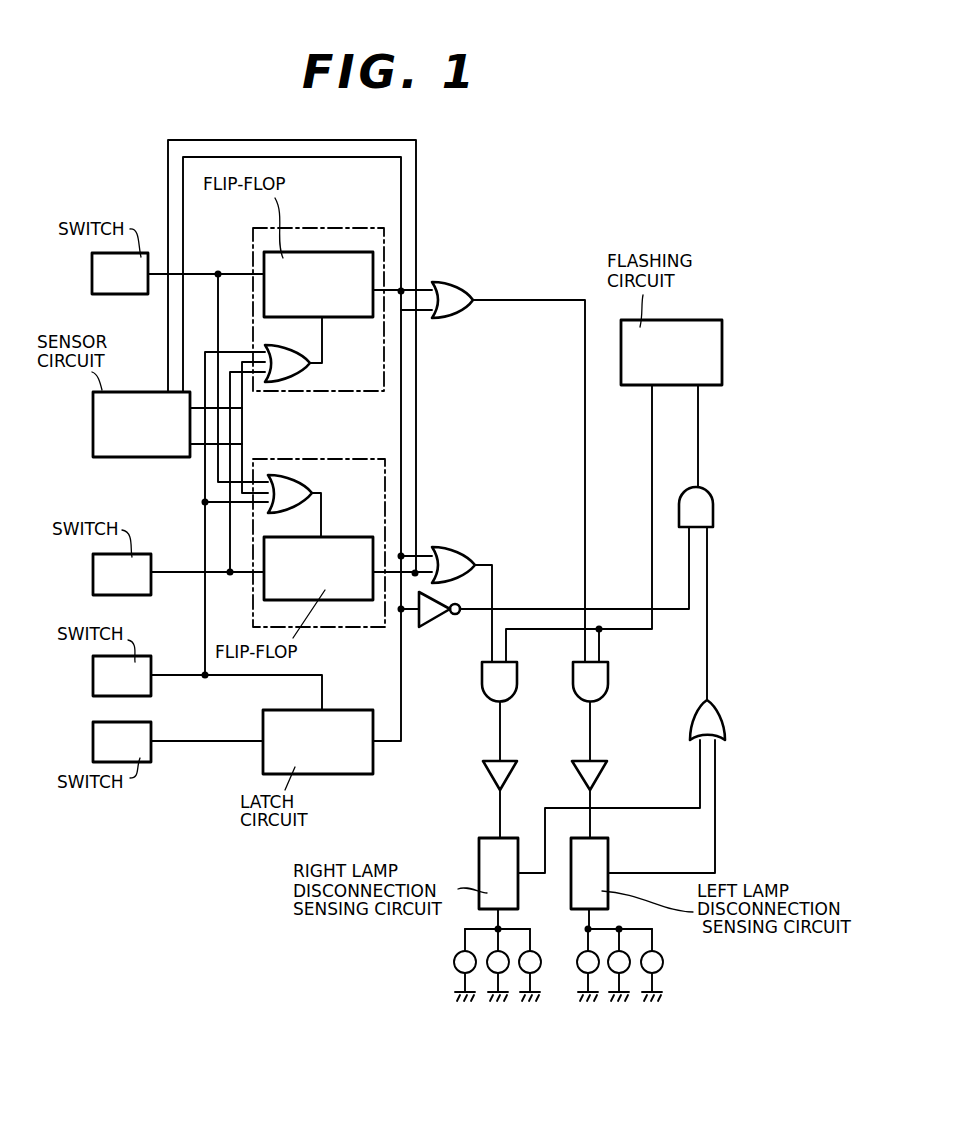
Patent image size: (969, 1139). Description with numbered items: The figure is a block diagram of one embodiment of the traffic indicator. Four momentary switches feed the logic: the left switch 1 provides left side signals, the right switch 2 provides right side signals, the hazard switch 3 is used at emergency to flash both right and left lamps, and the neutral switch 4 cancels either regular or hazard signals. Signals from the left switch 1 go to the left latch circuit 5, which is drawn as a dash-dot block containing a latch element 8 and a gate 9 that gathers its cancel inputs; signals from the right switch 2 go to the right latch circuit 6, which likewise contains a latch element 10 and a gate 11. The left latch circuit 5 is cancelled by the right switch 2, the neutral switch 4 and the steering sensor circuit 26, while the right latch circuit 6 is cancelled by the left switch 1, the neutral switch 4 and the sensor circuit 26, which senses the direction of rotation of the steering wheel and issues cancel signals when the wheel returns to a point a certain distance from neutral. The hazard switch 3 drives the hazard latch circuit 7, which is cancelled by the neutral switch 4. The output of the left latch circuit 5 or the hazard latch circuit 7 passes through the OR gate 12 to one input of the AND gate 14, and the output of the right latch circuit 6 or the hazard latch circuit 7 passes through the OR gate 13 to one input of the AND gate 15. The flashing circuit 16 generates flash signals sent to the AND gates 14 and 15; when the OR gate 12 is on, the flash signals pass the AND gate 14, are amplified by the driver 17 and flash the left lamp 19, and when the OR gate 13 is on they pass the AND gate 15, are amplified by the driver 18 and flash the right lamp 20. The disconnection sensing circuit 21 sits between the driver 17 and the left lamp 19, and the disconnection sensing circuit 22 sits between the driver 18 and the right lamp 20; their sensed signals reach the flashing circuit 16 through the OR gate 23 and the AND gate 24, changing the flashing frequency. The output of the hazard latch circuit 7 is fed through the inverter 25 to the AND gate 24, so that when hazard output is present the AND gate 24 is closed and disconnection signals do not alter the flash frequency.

The momentary left switch 1 is at (120, 273).
The momentary right switch 2 is at (122, 574).
The hazard switch 3 is at (122, 742).
The momentary neutral switch 4 is at (122, 676).
The left latch circuit 5 is at (295, 227).
The right latch circuit 6 is at (302, 458).
The hazard latch circuit 7 is at (318, 742).
The flip-flop block 8 is at (318, 284).
The OR gate 9 is at (290, 357).
The flip-flop block 10 is at (318, 568).
The OR gate 11 is at (303, 490).
The OR gate 12 is at (462, 290).
The OR gate 13 is at (460, 552).
The AND gate 14 is at (610, 680).
The AND gate 15 is at (517, 680).
The flashing circuit 16 is at (671, 352).
The driver 17 is at (603, 768).
The driver 18 is at (486, 768).
The left lamp 19 is at (632, 955).
The right lamp 20 is at (457, 955).
The disconnection sensing circuit 21 is at (589, 873).
The disconnection sensing circuit 22 is at (498, 873).
The OR gate 23 is at (688, 725).
The AND gate 24 is at (714, 513).
The inverter 25 is at (447, 617).
The sensor circuit 26 is at (141, 424).